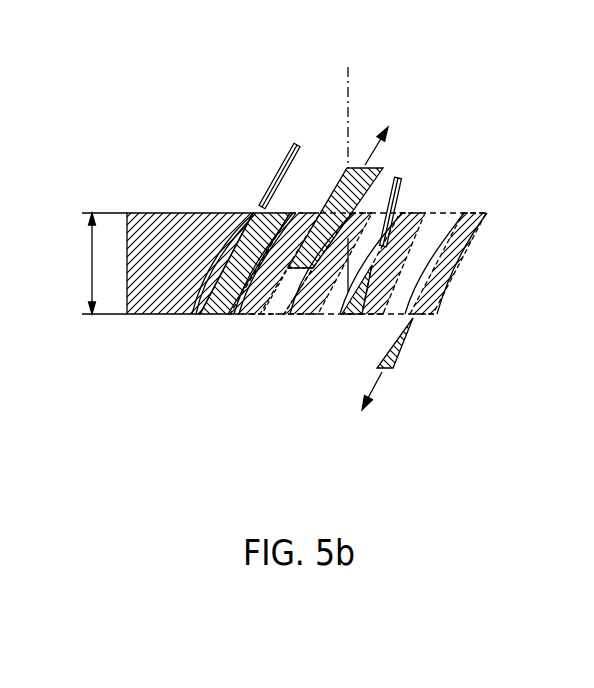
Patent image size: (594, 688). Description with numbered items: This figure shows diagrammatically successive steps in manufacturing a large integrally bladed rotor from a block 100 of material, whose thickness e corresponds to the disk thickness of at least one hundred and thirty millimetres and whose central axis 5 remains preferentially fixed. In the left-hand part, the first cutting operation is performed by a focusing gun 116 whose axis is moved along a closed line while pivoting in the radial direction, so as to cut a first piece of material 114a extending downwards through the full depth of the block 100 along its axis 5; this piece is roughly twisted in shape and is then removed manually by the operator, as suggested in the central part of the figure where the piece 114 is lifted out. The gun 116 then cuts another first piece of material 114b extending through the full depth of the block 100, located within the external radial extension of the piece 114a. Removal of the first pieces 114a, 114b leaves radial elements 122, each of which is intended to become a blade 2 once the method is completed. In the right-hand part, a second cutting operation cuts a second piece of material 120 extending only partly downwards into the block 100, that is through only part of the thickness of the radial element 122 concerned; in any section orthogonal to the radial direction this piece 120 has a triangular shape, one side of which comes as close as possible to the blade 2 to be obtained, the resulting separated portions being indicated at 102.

The block 100 is at (177, 197).
The block segments (separated portions) 102 is at (437, 310).
The blade 2 is at (185, 321).
The central axis 5 is at (348, 78).
The wedge being inserted 114 is at (344, 172).
The first piece of material 114a is at (213, 315).
The first piece of material 114b is at (275, 263).
The focusing gun 116 is at (295, 147).
The second piece of material 120 is at (355, 314).
The radial element 122 is at (287, 317).
The thickness e is at (81, 258).